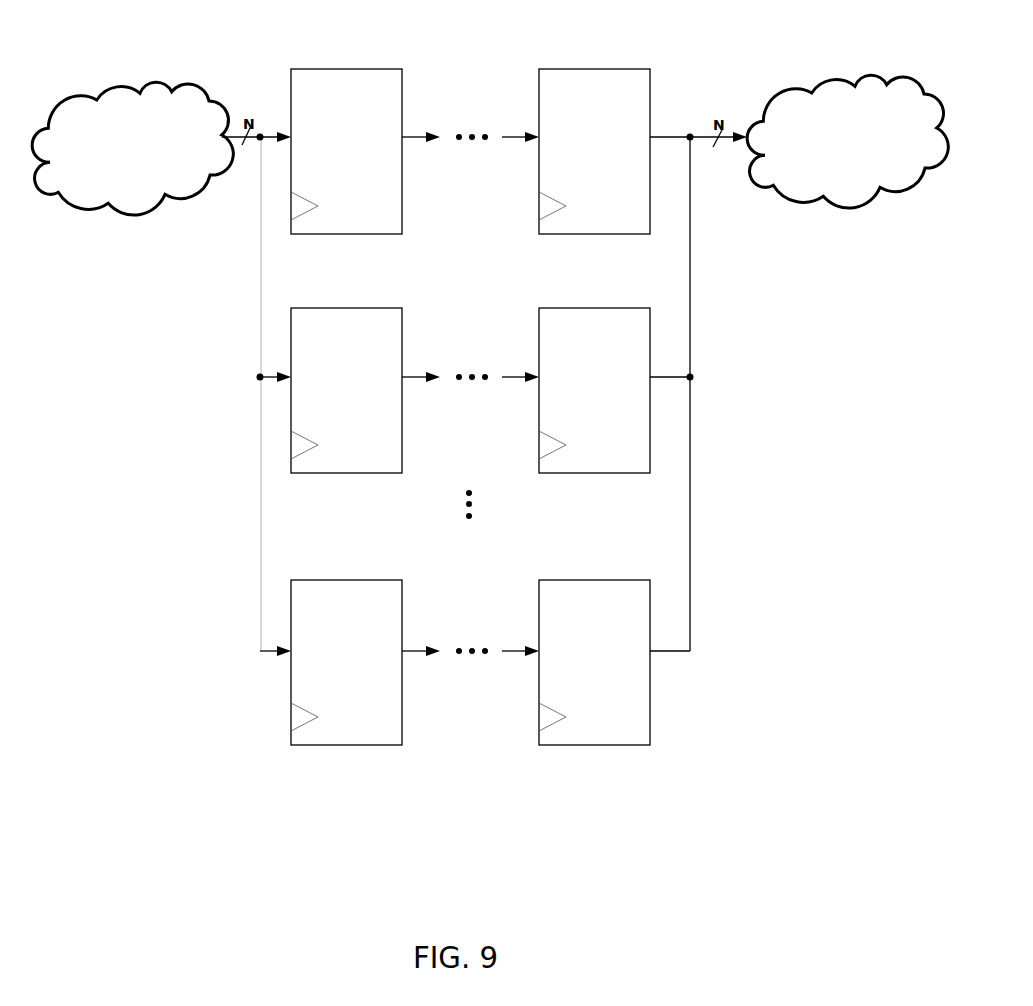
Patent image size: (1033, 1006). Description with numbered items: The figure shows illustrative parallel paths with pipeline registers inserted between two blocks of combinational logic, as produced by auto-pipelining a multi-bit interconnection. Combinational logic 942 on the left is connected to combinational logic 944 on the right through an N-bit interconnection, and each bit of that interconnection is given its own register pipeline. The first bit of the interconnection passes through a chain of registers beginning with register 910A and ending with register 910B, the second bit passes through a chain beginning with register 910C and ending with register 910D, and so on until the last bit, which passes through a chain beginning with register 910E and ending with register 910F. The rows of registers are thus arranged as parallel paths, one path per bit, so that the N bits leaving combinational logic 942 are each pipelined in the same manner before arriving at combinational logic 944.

The combinational logic 942 is at (165, 90).
The combinational logic 944 is at (880, 83).
The register 910A is at (345, 69).
The register 910B is at (592, 69).
The register 910C is at (345, 308).
The register 910D is at (593, 308).
The register 910E is at (345, 580).
The register 910F is at (593, 580).